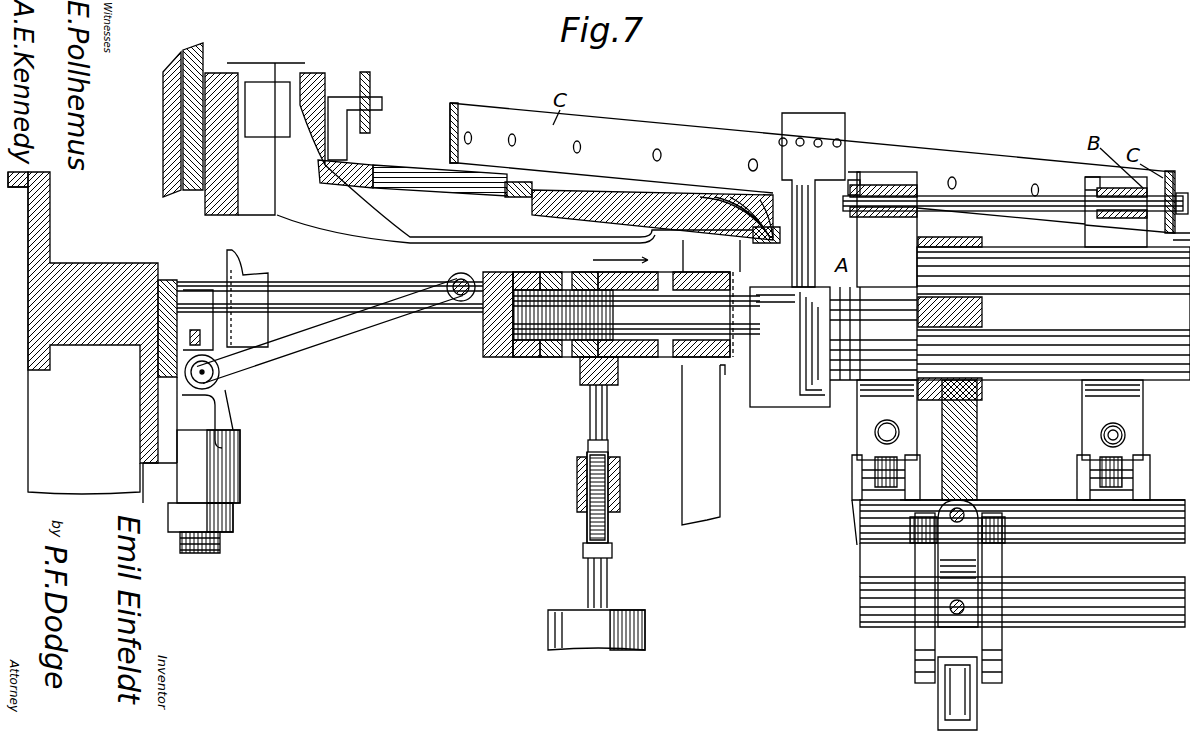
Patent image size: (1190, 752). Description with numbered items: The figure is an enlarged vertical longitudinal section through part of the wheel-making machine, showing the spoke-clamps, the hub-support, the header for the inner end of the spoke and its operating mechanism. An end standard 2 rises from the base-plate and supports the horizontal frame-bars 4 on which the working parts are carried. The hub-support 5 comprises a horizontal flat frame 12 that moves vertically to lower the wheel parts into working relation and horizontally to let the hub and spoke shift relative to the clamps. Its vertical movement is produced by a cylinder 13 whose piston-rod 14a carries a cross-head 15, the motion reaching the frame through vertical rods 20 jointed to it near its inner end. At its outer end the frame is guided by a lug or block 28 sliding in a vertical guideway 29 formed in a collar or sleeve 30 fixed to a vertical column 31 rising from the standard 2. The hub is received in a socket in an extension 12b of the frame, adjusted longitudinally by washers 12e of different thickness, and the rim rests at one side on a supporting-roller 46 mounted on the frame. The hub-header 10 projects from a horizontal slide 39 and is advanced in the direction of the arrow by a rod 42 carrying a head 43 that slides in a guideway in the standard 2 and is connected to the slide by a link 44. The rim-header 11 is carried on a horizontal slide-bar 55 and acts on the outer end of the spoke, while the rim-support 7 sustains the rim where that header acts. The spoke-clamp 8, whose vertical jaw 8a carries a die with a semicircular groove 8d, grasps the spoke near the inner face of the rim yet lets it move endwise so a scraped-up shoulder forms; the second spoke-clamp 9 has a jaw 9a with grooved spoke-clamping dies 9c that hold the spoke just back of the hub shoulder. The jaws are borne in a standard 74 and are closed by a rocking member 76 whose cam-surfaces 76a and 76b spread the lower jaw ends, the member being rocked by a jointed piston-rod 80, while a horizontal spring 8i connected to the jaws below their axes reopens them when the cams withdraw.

The standard 2 is at (83, 333).
The frame-bars 4 is at (333, 296).
The hub-support 5 is at (763, 248).
The rim-support 7 is at (1181, 243).
The spoke-clamp 8 is at (1116, 212).
The jaw 8a is at (1127, 440).
The groove 8d is at (1100, 195).
The spring 8i is at (1100, 435).
The spoke-clamp 9 is at (882, 229).
The jaw 9a is at (878, 410).
The spoke-clamping dies 9c is at (888, 192).
The hub-header 10 is at (797, 260).
The rim-header 11 is at (1184, 194).
The horizontal flat frame 12 is at (525, 218).
The extension 12b is at (757, 200).
The washers 12e is at (745, 205).
The cylinder 13 is at (596, 630).
The piston-rod 14a is at (607, 573).
The cross-head 15 is at (577, 488).
The vertical rods 20 is at (703, 445).
The lug or block 28 is at (267, 109).
The vertical guideway 29 is at (255, 139).
The collar or sleeve 30 is at (207, 112).
The vertical column 31 is at (169, 70).
The slide 39 is at (503, 282).
The rod 42 is at (222, 545).
The head 43 is at (170, 390).
The link 44 is at (336, 328).
The supporting-roller 46 is at (425, 165).
The slide-bar 55 is at (1010, 318).
The standard 74 is at (978, 447).
The rocking member 76 is at (1018, 538).
The cam-surface 76a is at (1036, 497).
The cam-surface 76b is at (1075, 612).
The piston-rod 80 is at (955, 698).